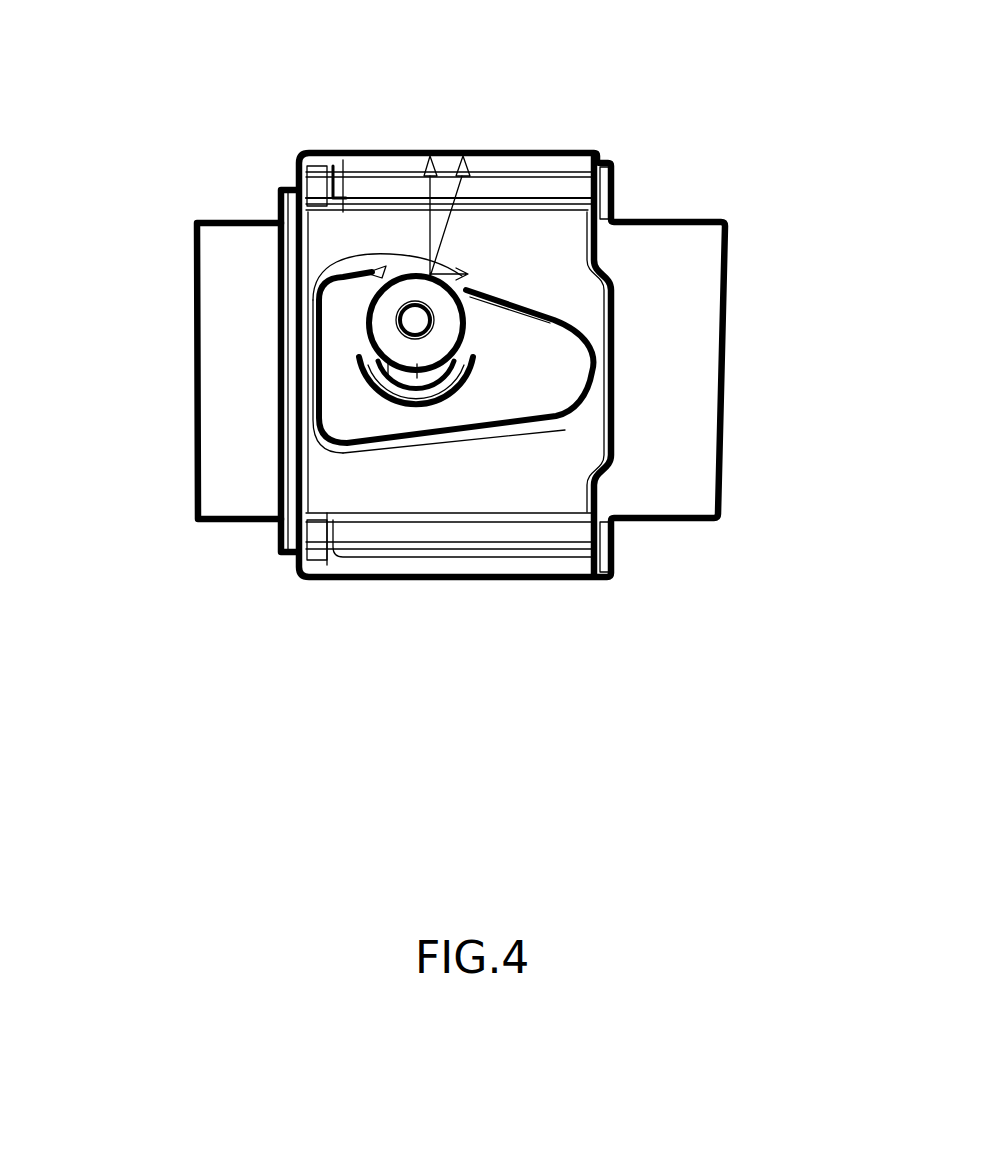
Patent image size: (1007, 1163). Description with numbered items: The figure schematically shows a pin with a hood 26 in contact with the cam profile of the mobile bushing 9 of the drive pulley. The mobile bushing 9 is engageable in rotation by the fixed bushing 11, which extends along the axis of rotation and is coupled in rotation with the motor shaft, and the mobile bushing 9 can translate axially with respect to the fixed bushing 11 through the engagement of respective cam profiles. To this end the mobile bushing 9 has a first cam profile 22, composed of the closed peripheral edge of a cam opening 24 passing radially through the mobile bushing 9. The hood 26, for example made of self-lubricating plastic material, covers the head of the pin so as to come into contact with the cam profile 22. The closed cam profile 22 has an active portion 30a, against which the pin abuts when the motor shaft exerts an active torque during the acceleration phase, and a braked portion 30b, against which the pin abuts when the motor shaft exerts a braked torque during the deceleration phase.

The mobile bushing 9 is at (600, 163).
The fixed bushing 11 is at (237, 342).
The first cam profile 22 is at (397, 450).
The cam opening 24 is at (560, 373).
The hood 26 is at (385, 334).
The active portion 30a is at (545, 312).
The braked portion 30b is at (512, 430).